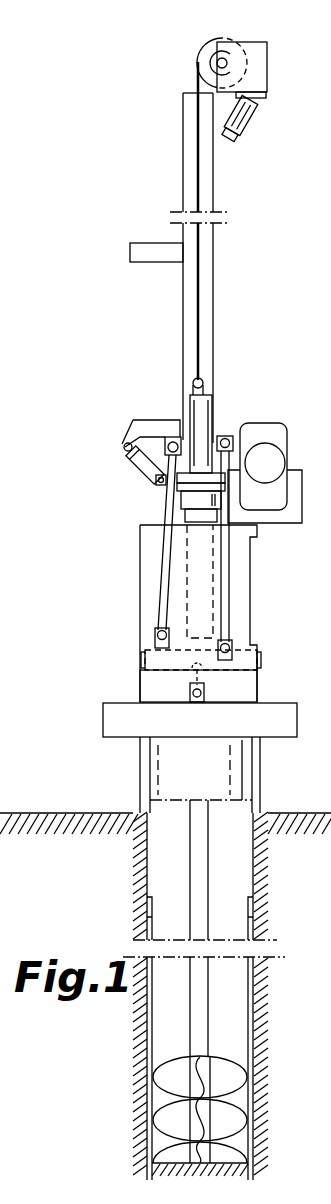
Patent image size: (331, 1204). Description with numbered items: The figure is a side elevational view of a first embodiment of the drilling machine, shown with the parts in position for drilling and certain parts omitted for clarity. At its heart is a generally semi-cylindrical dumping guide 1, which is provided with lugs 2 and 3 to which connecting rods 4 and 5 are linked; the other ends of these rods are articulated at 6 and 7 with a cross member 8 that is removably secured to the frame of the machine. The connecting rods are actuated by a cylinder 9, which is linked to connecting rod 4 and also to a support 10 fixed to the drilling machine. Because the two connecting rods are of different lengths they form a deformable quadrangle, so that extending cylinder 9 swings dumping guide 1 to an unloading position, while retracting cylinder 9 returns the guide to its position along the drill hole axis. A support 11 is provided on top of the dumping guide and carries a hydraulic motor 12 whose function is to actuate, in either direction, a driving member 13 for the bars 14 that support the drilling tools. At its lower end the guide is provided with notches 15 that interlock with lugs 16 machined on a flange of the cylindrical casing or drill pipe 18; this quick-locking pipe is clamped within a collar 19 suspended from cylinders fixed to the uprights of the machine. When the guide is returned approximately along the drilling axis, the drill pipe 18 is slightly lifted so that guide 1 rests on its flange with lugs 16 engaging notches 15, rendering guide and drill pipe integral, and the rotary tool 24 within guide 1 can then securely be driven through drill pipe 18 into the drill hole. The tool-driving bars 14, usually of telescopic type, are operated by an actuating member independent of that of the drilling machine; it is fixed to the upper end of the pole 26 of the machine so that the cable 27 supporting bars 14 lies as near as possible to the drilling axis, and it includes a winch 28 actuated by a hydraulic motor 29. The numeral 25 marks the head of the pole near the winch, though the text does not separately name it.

The dumping guide 1 is at (250, 600).
The lug 2 is at (155, 637).
The lug 3 is at (232, 648).
The connecting rod 4 is at (164, 585).
The connecting rod 5 is at (229, 572).
The articulation 6 is at (172, 436).
The articulation 7 is at (229, 438).
The cross member 8 is at (223, 436).
The cylinder 9 is at (140, 472).
The support 10 is at (124, 448).
The support 11 is at (296, 492).
The hydraulic motor 12 is at (278, 458).
The driving member 13 is at (180, 500).
The bars 14 is at (212, 405).
The notches 15 is at (140, 676).
The lugs 16 is at (141, 660).
The drill pipe 18 is at (253, 781).
The collar 19 is at (282, 712).
The rotary tool 24 is at (240, 1073).
The mast head 25 is at (182, 92).
The pole 26 is at (183, 106).
The cable 27 is at (202, 185).
The winch 28 is at (215, 45).
The hydraulic motor 29 is at (262, 121).